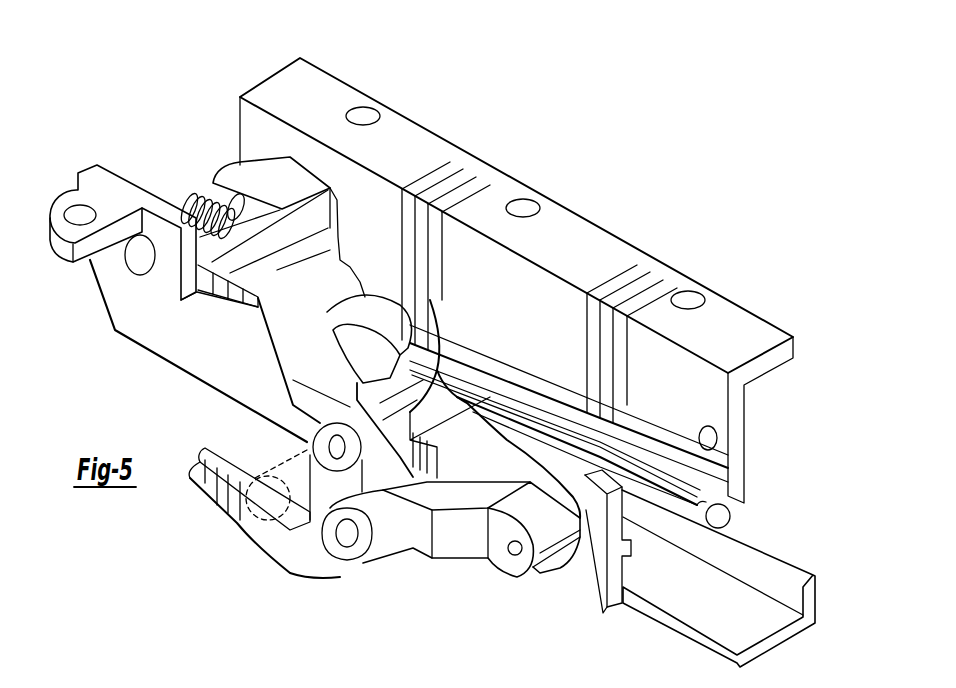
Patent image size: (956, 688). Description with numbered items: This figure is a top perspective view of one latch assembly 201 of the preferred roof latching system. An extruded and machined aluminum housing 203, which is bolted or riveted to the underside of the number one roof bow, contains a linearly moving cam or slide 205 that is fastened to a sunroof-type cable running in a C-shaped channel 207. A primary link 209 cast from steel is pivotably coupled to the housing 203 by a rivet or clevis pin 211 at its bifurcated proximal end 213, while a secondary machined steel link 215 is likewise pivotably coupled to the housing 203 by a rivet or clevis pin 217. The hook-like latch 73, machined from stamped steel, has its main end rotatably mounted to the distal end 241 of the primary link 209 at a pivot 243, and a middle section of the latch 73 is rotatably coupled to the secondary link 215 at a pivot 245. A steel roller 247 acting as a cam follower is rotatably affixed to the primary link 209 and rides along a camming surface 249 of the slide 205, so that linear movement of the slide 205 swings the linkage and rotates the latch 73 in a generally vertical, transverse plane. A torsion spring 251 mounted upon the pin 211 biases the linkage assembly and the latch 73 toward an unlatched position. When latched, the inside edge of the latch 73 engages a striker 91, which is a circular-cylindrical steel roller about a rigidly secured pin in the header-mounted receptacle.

The latch assembly 201 is at (623, 158).
The housing 203 is at (637, 292).
The slide 205 is at (703, 595).
The C-shaped channel 207 is at (723, 513).
The primary link 209 is at (322, 298).
The clevis pin 211 is at (135, 254).
The bifurcated proximal end 213 is at (277, 173).
The secondary link 215 is at (450, 537).
The clevis pin 217 is at (515, 553).
The distal end 241 is at (430, 300).
The pivot 243 is at (333, 445).
The pivot 245 is at (338, 540).
The roller 247 is at (373, 302).
The camming surface 249 is at (460, 420).
The torsion spring 251 is at (190, 203).
The striker 91 is at (265, 462).
The latch 73 is at (265, 537).